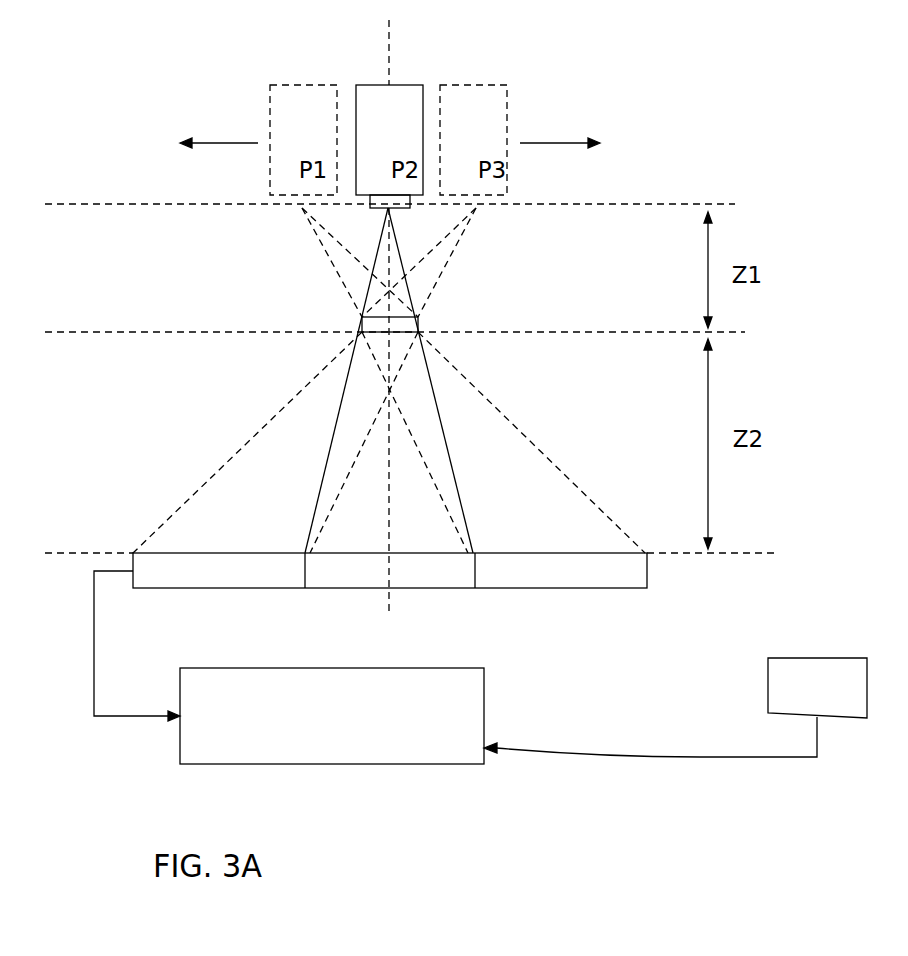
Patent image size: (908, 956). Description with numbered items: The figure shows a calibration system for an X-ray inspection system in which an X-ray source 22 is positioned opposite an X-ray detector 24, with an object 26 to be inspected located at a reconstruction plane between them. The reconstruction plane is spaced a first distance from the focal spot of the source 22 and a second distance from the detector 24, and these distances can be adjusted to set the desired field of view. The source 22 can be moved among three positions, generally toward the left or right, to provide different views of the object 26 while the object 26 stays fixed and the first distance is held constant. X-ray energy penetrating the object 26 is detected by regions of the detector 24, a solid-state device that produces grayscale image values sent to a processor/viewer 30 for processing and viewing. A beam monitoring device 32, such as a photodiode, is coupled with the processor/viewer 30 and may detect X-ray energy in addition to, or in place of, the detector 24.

The X-ray source 22 is at (377, 122).
The object 26 is at (418, 324).
The X-ray detector 24 is at (603, 588).
The processor/viewer 30 is at (349, 732).
The beam monitoring device 32 is at (838, 699).